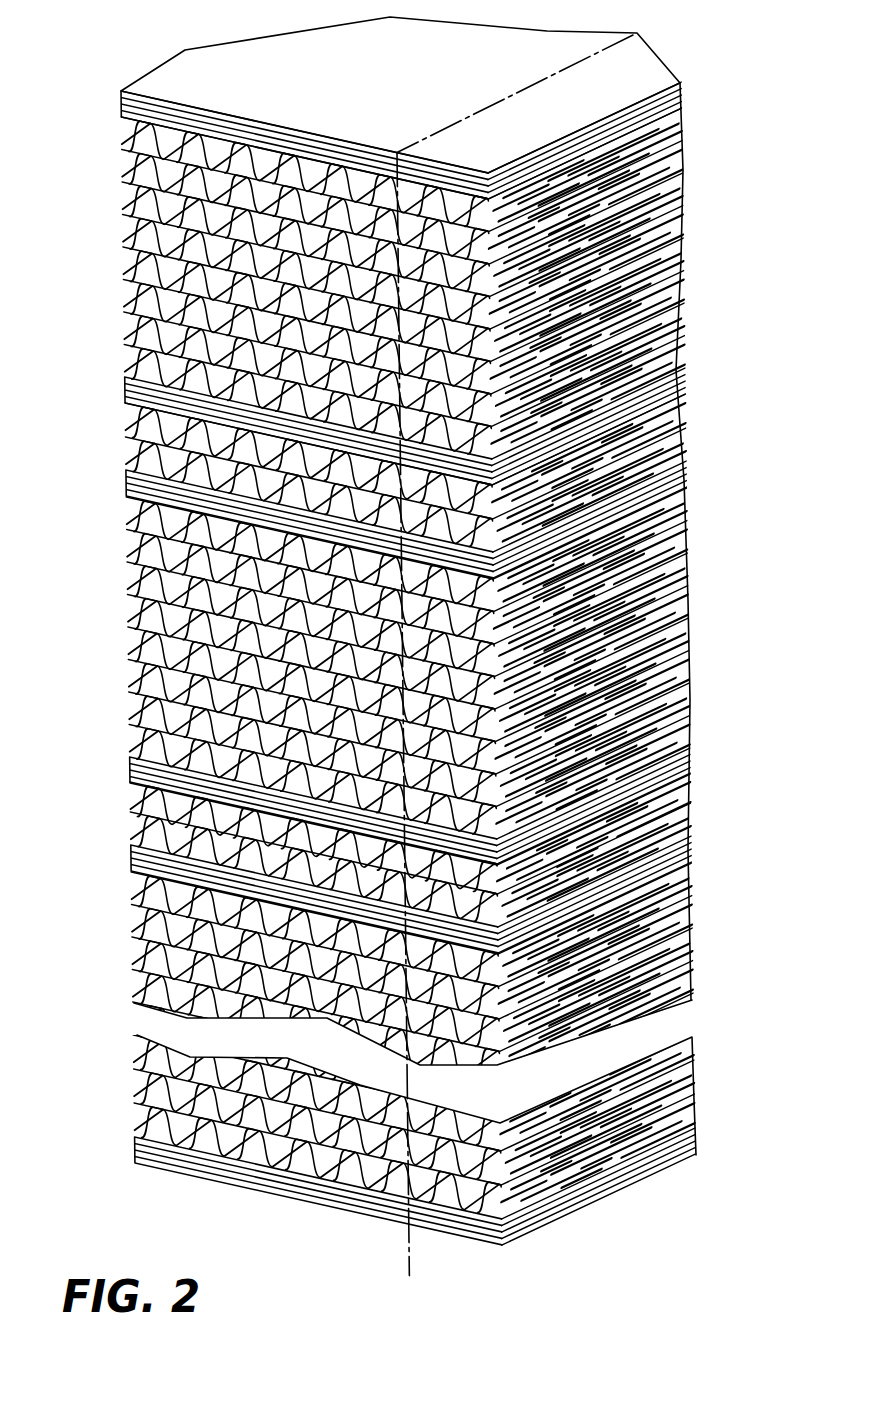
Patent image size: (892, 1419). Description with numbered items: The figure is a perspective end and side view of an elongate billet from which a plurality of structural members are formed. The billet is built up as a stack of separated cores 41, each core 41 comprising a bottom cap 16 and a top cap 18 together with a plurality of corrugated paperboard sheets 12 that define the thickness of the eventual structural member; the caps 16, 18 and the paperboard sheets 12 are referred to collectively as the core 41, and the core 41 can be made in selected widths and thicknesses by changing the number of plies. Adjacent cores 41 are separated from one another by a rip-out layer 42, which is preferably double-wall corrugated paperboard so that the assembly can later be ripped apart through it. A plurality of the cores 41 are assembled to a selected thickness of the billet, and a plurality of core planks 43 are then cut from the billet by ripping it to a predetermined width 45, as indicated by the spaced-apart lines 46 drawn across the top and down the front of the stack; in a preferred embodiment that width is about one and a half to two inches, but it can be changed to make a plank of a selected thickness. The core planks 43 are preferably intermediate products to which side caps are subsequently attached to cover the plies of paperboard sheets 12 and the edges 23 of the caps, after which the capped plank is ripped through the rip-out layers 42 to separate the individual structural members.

The corrugated paperboard sheets 12 is at (404, 663).
The bottom cap 16 is at (695, 393).
The top cap 18 is at (121, 106).
The edges of the caps 23 is at (498, 183).
The core 41 is at (112, 115).
The rip-out layer 42 is at (112, 405).
The core plank 43 is at (674, 1236).
The predetermined width 45 is at (512, 98).
The spaced-apart lines 46 is at (597, 52).